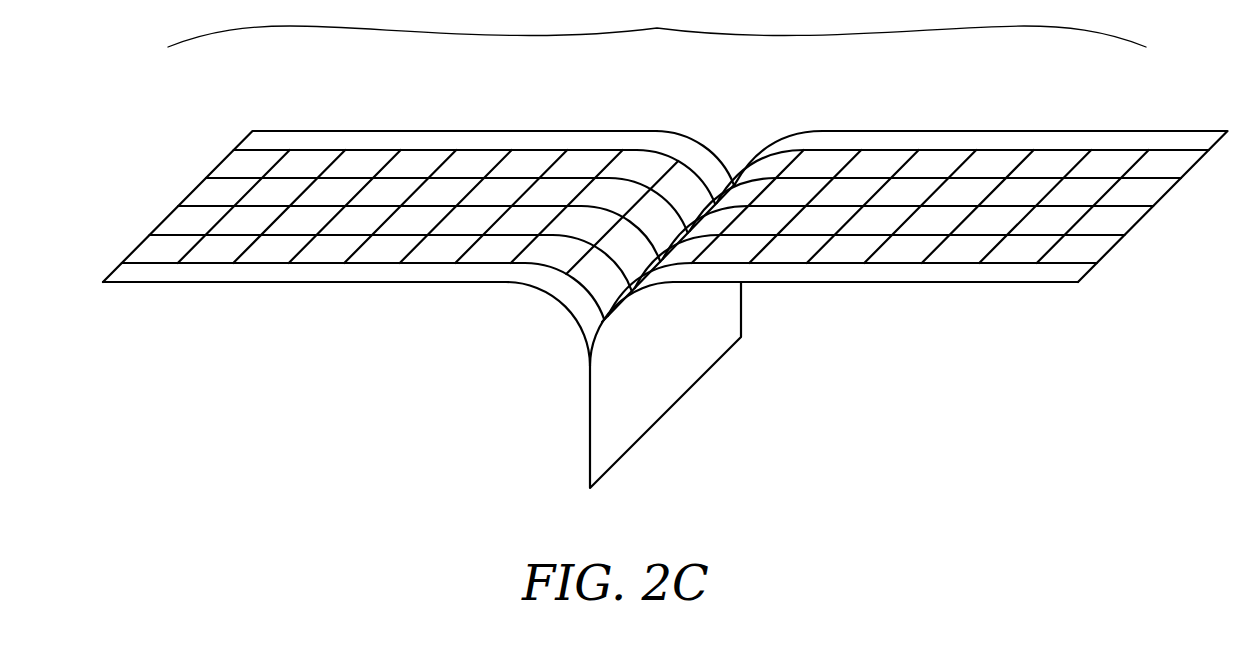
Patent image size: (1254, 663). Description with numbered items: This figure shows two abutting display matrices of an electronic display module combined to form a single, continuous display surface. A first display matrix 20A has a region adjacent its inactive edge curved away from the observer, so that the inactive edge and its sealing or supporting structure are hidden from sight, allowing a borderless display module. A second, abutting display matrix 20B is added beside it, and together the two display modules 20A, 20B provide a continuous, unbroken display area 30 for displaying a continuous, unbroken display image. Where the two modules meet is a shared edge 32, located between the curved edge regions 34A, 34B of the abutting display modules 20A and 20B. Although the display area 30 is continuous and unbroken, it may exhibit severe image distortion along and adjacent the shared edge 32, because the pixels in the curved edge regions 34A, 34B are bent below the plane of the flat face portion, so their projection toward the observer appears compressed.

The display area 30 is at (657, 25).
The display matrix 20A is at (367, 319).
The second display matrix 20B is at (875, 319).
The curved edge region 34A is at (712, 124).
The curved edge region 34B is at (635, 320).
The shared edge 32 is at (735, 172).